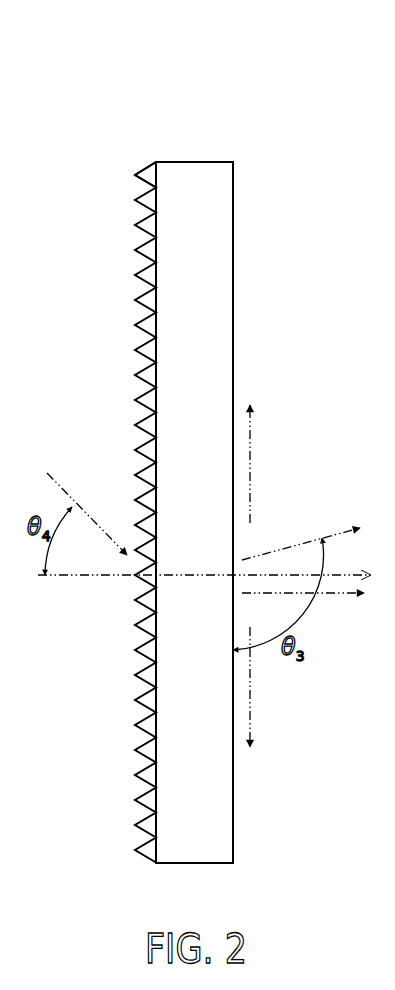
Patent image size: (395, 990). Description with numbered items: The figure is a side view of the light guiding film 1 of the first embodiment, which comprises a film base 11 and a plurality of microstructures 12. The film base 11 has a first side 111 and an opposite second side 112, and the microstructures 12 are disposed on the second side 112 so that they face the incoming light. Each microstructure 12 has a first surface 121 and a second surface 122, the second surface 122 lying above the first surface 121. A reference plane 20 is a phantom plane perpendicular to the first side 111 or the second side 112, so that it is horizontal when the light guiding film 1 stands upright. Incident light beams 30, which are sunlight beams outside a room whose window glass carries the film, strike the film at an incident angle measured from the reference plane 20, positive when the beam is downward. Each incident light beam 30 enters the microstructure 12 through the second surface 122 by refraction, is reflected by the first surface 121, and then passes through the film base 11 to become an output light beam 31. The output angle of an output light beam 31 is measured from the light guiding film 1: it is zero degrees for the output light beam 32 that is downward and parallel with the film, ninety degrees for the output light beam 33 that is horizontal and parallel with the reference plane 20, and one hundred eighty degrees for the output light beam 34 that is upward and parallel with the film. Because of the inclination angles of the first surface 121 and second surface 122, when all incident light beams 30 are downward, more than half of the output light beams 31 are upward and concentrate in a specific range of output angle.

The light guiding film 1 is at (256, 82).
The film base 11 is at (192, 168).
The first side 111 is at (235, 180).
The second side 112 is at (153, 164).
The microstructure 12 is at (138, 172).
The first surface 121 is at (146, 181).
The second surface 122 is at (148, 171).
The reference plane 20 is at (330, 578).
The incident light beam 30 is at (70, 483).
The output light beam 31 is at (310, 541).
The output light beam 32 is at (252, 690).
The output light beam 33 is at (327, 594).
The output light beam 34 is at (252, 460).